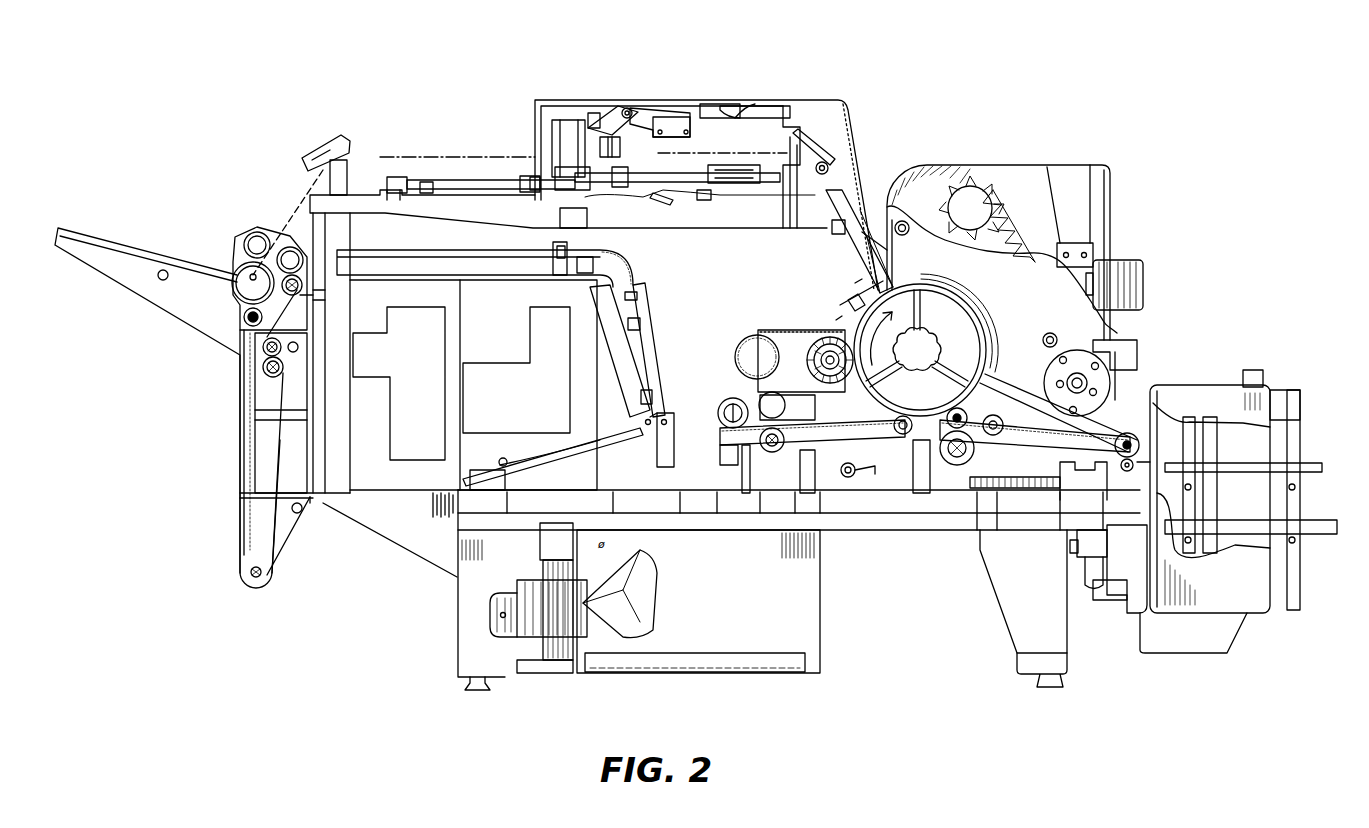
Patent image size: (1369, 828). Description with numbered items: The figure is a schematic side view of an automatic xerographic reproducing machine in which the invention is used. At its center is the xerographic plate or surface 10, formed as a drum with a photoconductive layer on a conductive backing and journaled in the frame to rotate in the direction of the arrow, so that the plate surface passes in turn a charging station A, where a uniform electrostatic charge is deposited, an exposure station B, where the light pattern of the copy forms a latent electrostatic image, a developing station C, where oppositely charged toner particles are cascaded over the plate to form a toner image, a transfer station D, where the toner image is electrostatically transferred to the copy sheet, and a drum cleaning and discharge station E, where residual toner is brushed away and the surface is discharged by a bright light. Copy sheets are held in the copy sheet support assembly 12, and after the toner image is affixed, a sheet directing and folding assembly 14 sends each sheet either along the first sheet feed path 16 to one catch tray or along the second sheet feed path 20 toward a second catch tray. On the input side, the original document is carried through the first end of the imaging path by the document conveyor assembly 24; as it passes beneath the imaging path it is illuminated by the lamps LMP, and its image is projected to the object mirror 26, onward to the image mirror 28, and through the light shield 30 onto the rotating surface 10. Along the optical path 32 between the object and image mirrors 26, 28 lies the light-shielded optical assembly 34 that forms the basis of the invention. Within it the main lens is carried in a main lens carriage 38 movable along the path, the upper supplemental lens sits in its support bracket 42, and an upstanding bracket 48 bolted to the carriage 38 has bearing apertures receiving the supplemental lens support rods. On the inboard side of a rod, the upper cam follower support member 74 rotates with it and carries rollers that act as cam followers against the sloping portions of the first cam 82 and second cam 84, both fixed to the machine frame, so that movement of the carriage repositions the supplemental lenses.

The xerographic plate or surface 10 is at (855, 311).
The copy sheet support assembly 12 is at (1207, 384).
The sheet directing and folding assembly 14 is at (692, 383).
The first sheet feed path 16 is at (537, 453).
The second sheet feed path 20 is at (620, 253).
The document conveyor assembly 24 is at (237, 270).
The object mirror 26 is at (347, 157).
The image mirror 28 is at (835, 177).
The light shield 30 is at (862, 282).
The optical path 32 is at (463, 157).
The optical assembly 34 is at (583, 88).
The main lens carriage 38 is at (609, 149).
The support bracket 42 is at (700, 110).
The upstanding bracket 48 is at (617, 122).
The upper cam follower support member 74 is at (647, 123).
The first cam 82 is at (753, 103).
The second cam 84 is at (742, 99).
The lamps LMP is at (258, 228).
The charging station A is at (840, 291).
The exposure station B is at (874, 228).
The developing station C is at (1130, 274).
The transfer station D is at (915, 466).
The drum cleaning and discharge station E is at (827, 315).